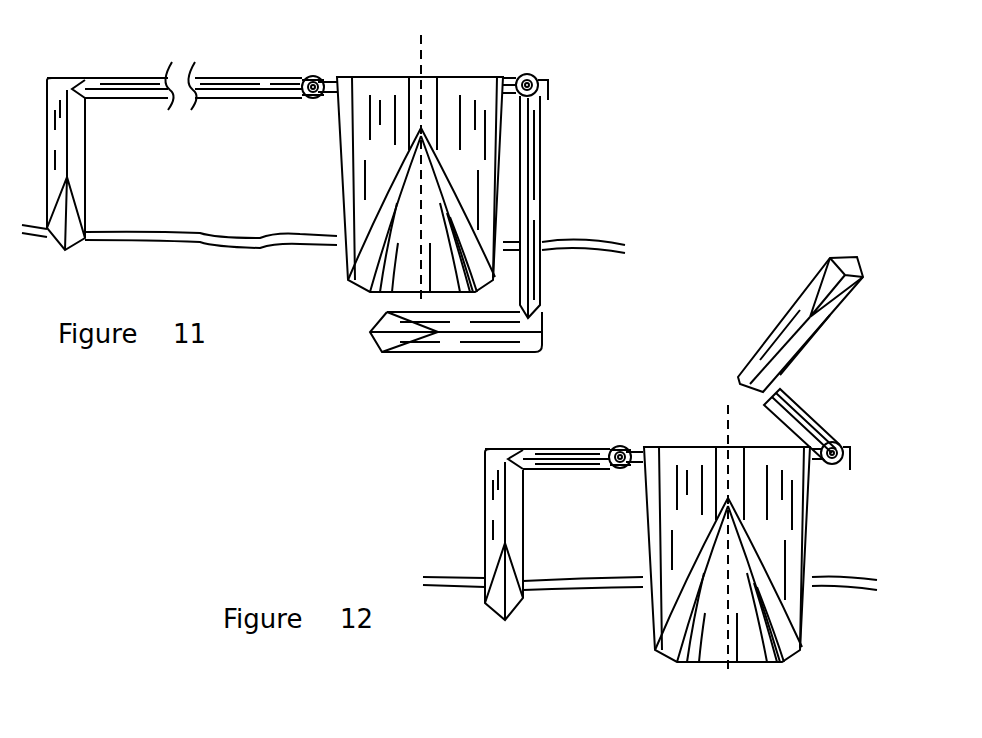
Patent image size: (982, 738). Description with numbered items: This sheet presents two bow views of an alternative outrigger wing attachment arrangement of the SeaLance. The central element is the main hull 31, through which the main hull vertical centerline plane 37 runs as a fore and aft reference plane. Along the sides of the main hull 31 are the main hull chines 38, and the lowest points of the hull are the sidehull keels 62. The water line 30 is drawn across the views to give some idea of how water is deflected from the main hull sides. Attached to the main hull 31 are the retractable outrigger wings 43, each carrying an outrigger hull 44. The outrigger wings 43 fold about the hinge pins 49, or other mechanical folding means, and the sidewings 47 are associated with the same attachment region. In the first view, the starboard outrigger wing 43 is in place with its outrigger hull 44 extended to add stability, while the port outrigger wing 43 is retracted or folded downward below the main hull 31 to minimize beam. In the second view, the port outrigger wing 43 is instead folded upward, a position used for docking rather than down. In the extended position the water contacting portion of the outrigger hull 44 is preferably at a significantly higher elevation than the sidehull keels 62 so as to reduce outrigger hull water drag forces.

In FIG. 11, the water line 30 is at (130, 240).
In FIG. 12, the water line 30 is at (555, 583).
In FIG. 11, the main hull 31 is at (358, 75).
In FIG. 12, the main hull 31 is at (685, 447).
In FIG. 11, the main hull vertical centerline plane 37 is at (422, 52).
In FIG. 12, the main hull vertical centerline plane 37 is at (733, 438).
In FIG. 11, the main hull chines 38 is at (390, 178).
In FIG. 12, the main hull chines 38 is at (752, 527).
In FIG. 11, the outrigger wings 43 is at (210, 63).
In FIG. 12, the outrigger wings 43 is at (532, 449).
In FIG. 11, the outrigger hull 44 is at (85, 133).
In FIG. 12, the outrigger hull 44 is at (523, 522).
In FIG. 11, the sidewings 47 is at (137, 73).
In FIG. 12, the sidewings 47 is at (790, 392).
In FIG. 11, the hinge pins 49 is at (313, 77).
In FIG. 12, the hinge pins 49 is at (617, 448).
In FIG. 11, the sidehull keels 62 is at (383, 295).
In FIG. 12, the sidehull keels 62 is at (710, 663).